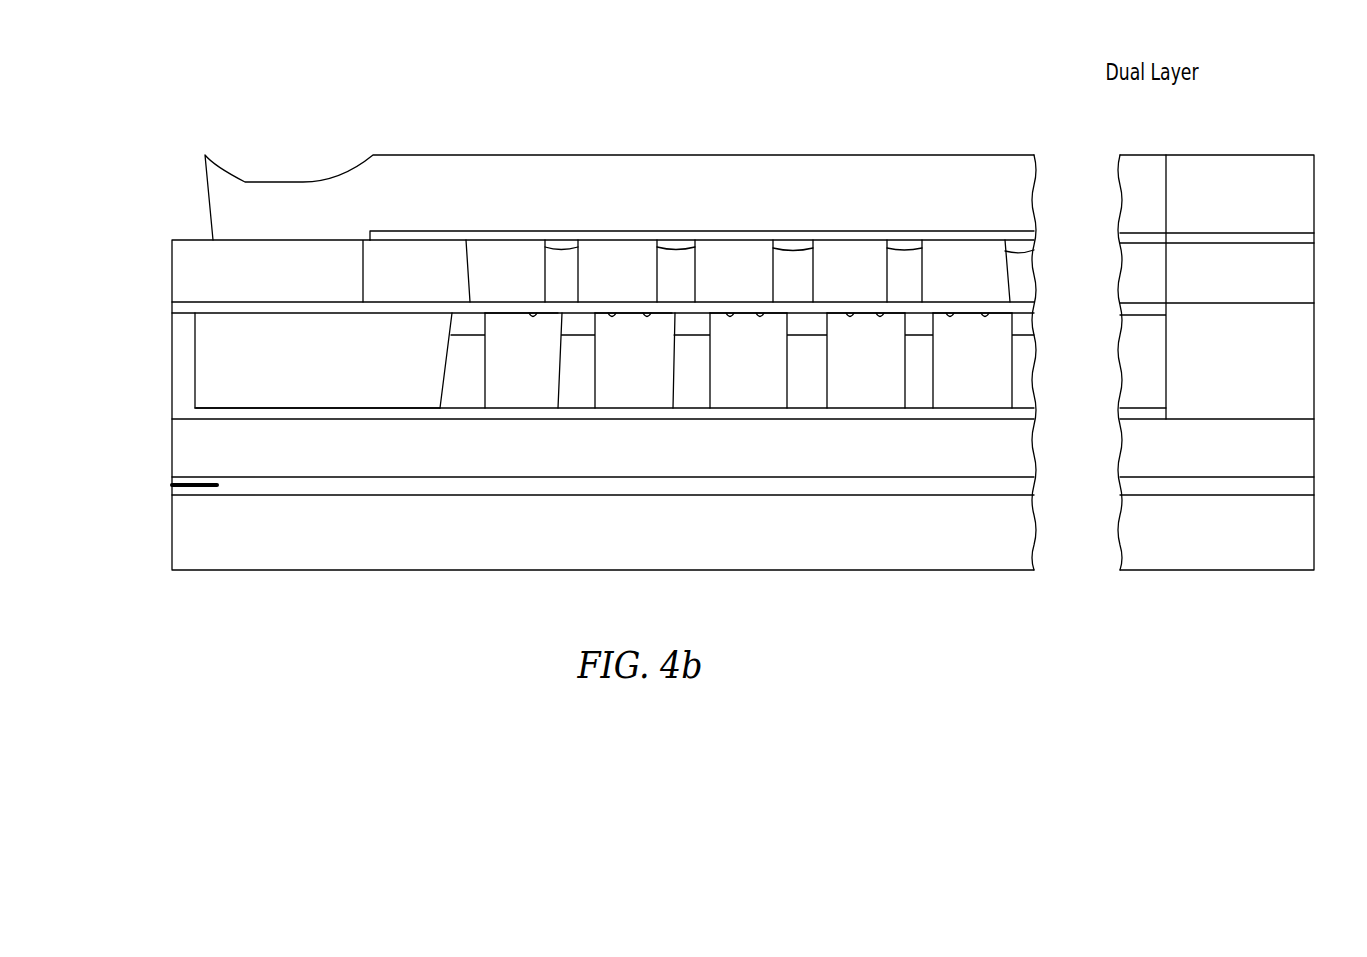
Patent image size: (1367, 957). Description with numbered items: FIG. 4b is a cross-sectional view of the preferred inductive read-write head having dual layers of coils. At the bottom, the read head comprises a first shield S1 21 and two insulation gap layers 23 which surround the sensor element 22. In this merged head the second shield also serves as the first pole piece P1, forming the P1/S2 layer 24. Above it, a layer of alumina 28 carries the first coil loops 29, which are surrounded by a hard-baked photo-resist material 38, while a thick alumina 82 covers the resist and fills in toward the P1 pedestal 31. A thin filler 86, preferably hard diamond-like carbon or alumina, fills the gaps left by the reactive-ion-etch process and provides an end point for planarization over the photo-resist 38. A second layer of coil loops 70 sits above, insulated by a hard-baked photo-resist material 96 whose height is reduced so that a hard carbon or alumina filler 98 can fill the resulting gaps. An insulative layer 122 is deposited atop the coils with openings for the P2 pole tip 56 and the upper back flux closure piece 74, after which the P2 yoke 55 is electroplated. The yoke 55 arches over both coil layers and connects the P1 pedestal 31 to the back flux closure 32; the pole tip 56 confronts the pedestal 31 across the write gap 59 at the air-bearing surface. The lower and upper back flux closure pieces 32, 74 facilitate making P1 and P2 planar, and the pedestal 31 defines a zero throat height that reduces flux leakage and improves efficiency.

The first shield S1 21 is at (830, 546).
The sensor element 22 is at (163, 485).
The insulation (gap) layers 23 is at (312, 490).
The second shield / first pole piece (P1/S2 layer) 24 is at (827, 464).
The layer of alumina 28 is at (386, 408).
The coil loops 29 is at (509, 374).
The P1 pedestal 31 is at (177, 365).
The back flux closure (back gap) 32 is at (1306, 400).
The photo-resist material 38 is at (451, 396).
The P2 yoke 55 is at (910, 204).
The P2 pole tip 56 is at (174, 258).
The write gap 59 is at (172, 307).
The coil loops (second coil layer) 70 is at (494, 284).
The upper back flux closure piece 74 is at (1306, 283).
The thick alumina 82 is at (285, 380).
The filler 86 is at (702, 322).
The photo-resist material (second layer) 96 is at (549, 289).
The filler (hard carbon or alumina) 98 is at (794, 245).
The insulative layer 122 is at (440, 231).